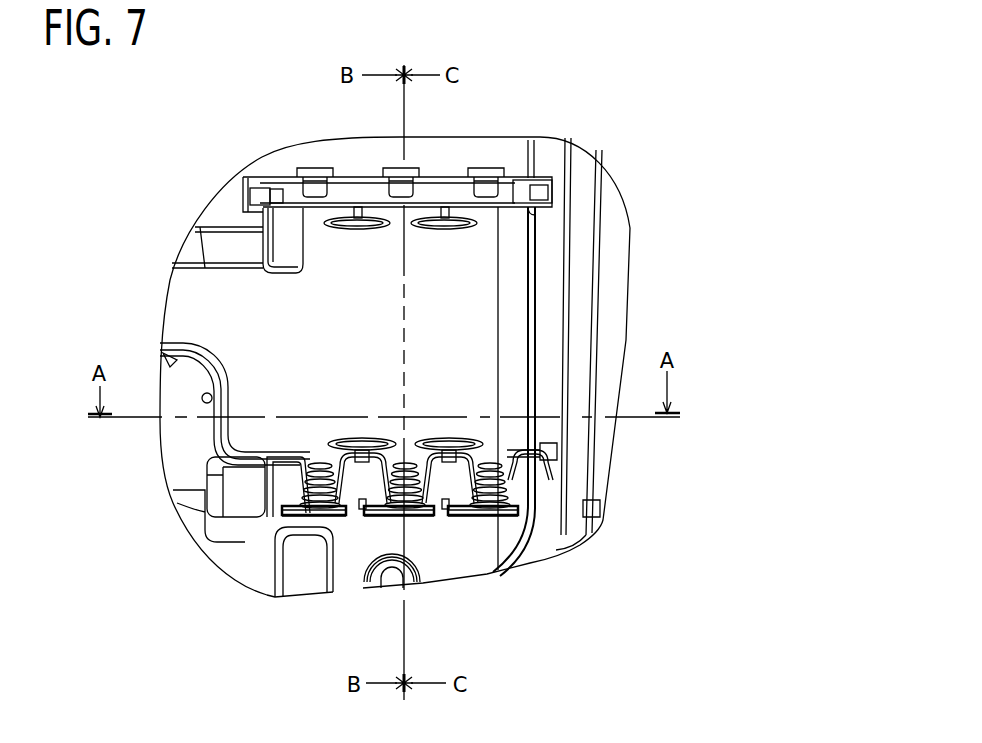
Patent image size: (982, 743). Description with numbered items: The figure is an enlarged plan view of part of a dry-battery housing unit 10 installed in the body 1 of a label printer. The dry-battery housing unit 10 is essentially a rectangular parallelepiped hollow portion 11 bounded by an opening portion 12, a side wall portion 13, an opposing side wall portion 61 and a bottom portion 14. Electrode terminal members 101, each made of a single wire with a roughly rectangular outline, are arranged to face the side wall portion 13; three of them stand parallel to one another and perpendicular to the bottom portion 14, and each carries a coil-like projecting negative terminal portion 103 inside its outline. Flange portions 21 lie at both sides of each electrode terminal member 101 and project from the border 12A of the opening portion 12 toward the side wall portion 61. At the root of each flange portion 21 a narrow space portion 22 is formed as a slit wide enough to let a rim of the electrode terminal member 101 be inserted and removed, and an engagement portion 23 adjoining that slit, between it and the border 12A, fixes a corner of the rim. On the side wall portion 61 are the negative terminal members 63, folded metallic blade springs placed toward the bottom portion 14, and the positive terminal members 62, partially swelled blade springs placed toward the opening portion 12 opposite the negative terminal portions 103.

The body 1 is at (633, 268).
The dry-battery housing unit 10 is at (594, 238).
The hollow portion 11 is at (468, 318).
The opening portion 12 is at (338, 320).
The border 12A is at (436, 589).
The side wall portion 13 is at (482, 514).
The bottom portion 14 is at (339, 276).
The flange portion 21 is at (527, 472).
The narrow space portion 22 is at (440, 512).
The engagement portion 23 is at (452, 516).
The side wall portion 61 is at (240, 190).
The positive terminal member 62 is at (498, 178).
The negative terminal member 63 is at (470, 190).
The electrode terminal member 101 is at (488, 391).
The negative terminal portion 103 is at (390, 440).